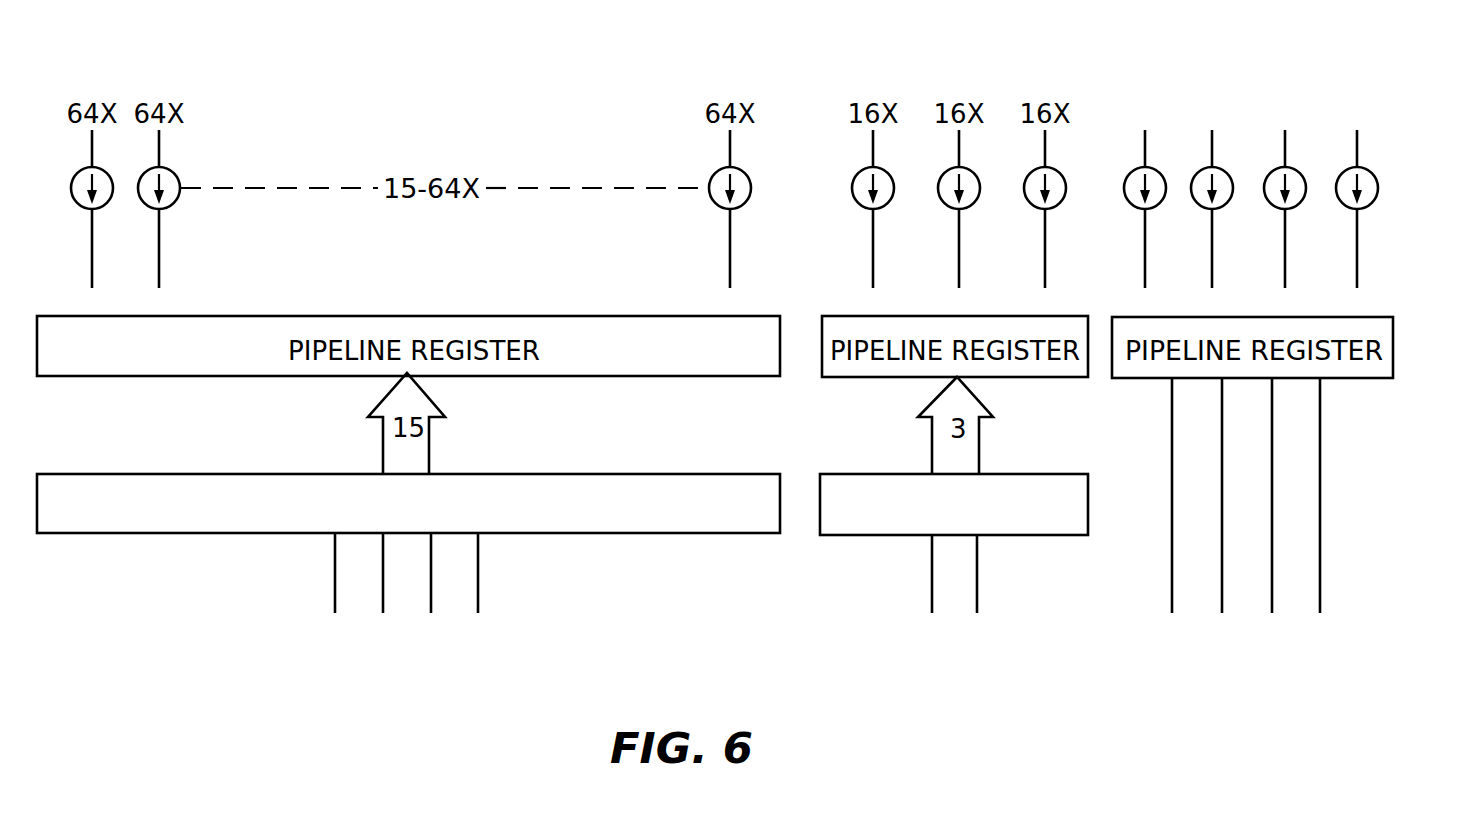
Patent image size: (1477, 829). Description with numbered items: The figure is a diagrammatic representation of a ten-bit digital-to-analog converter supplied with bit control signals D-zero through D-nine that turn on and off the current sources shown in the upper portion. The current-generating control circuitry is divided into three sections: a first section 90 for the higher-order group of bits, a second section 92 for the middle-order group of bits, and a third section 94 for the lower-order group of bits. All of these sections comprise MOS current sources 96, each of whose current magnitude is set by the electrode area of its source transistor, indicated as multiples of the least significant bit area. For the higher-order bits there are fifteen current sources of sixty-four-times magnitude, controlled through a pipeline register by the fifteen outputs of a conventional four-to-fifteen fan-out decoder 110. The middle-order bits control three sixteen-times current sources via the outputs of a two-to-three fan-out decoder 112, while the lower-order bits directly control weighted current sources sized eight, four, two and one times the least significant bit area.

The first section 90 is at (312, 583).
The second section 92 is at (910, 583).
The third section 94 is at (1363, 590).
The MOS current sources 96 is at (1383, 150).
The 4:15 fan-out decoder 110 is at (55, 523).
The 2:3 fan-out decoder 112 is at (838, 527).